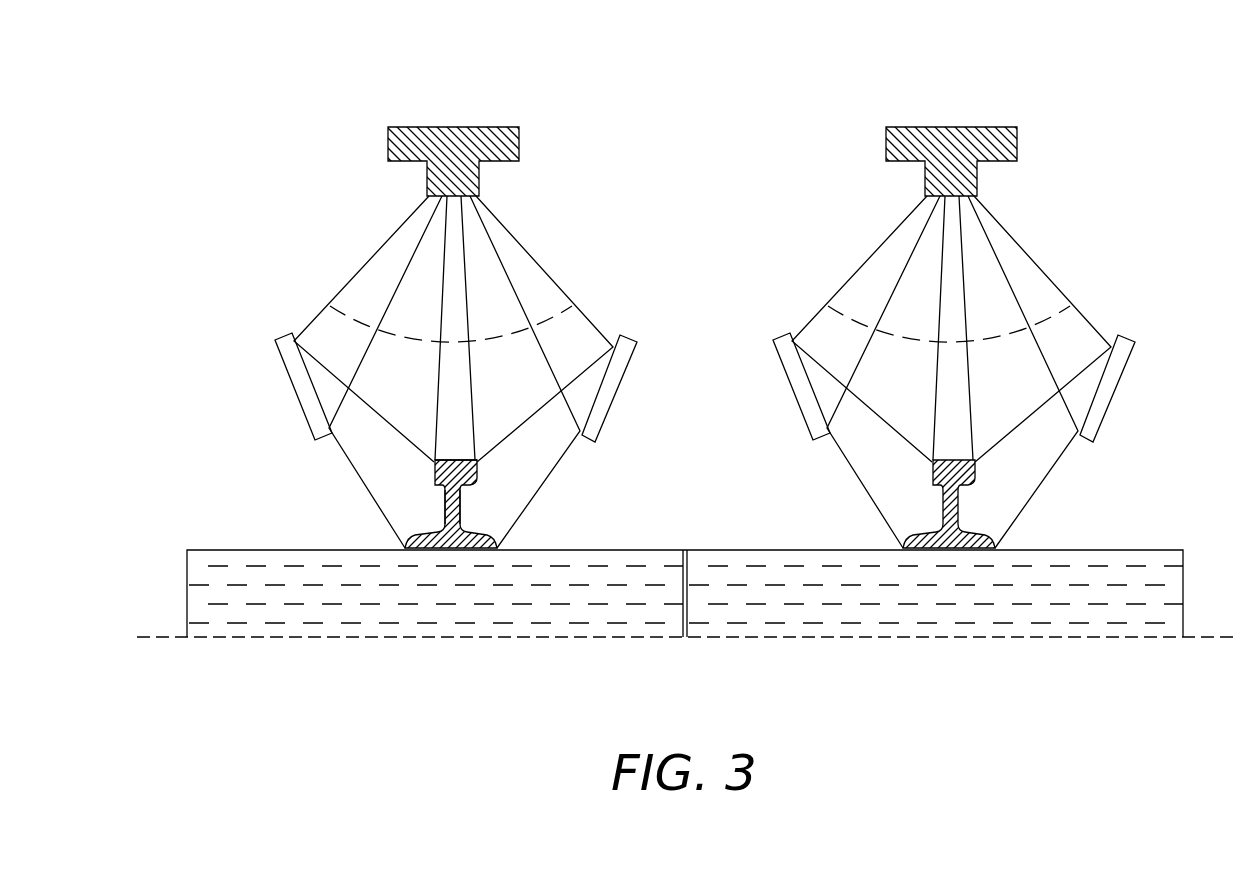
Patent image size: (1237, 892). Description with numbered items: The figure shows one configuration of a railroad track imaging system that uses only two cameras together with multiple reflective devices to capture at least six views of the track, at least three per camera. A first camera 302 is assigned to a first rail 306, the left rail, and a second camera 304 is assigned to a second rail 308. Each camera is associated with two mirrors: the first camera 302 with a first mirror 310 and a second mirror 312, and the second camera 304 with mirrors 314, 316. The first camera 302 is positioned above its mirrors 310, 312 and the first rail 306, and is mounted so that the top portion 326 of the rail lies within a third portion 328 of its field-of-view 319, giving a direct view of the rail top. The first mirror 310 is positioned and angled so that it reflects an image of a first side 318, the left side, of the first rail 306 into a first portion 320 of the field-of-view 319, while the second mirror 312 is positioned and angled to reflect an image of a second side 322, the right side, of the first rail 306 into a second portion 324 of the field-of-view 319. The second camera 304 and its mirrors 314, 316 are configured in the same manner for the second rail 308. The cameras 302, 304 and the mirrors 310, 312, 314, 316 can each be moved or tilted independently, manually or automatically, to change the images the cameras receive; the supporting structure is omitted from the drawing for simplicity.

The first camera 302 is at (455, 127).
The second camera 304 is at (953, 127).
The first rail 306 is at (424, 545).
The second rail 308 is at (950, 508).
The first mirror 310 is at (293, 389).
The second mirror 312 is at (618, 391).
The mirror 314 is at (791, 390).
The mirror 316 is at (1117, 391).
The first side of the first rail 318 is at (431, 491).
The field-of-view 319 is at (500, 338).
The first portion of the field-of-view 320 is at (350, 276).
The second side of the first rail 322 is at (473, 497).
The second portion of the field-of-view 324 is at (537, 281).
The top portion of the rail 326 is at (463, 449).
The third portion of the field-of-view 328 is at (450, 322).